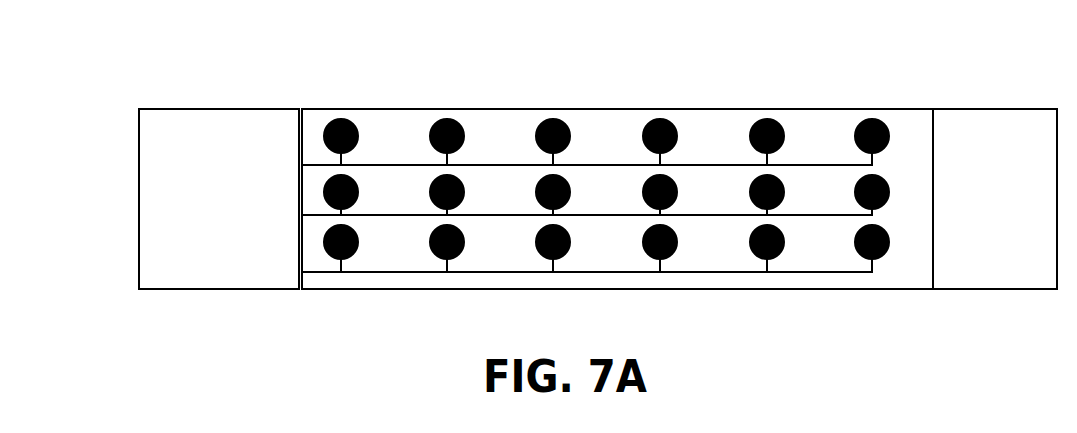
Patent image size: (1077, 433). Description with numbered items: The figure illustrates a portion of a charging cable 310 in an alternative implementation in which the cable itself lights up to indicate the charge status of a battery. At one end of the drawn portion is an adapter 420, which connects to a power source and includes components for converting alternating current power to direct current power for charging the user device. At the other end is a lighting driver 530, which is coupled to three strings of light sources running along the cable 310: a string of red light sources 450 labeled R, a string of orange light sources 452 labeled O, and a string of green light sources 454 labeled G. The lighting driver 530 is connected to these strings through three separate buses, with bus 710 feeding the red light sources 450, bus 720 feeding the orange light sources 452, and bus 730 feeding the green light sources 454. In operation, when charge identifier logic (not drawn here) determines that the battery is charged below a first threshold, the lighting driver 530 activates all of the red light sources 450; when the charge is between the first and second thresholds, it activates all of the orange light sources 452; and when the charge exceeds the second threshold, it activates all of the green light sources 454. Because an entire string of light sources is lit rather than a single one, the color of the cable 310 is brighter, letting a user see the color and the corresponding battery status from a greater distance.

The cable 310 is at (149, 52).
The adapter 420 is at (995, 199).
The red light sources 450 is at (445, 118).
The orange light sources 452 is at (459, 177).
The green light sources 454 is at (461, 250).
The lighting driver 530 is at (219, 199).
The bus 710 is at (308, 163).
The bus 720 is at (312, 216).
The bus 730 is at (308, 274).